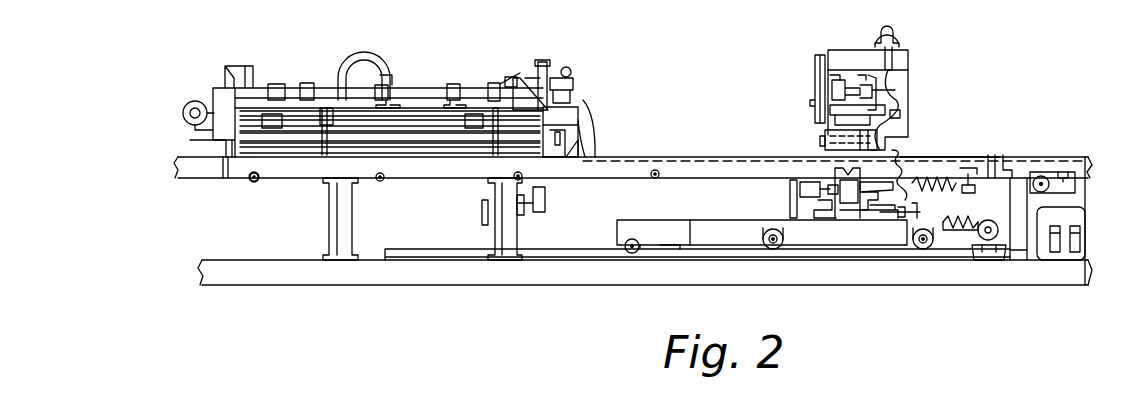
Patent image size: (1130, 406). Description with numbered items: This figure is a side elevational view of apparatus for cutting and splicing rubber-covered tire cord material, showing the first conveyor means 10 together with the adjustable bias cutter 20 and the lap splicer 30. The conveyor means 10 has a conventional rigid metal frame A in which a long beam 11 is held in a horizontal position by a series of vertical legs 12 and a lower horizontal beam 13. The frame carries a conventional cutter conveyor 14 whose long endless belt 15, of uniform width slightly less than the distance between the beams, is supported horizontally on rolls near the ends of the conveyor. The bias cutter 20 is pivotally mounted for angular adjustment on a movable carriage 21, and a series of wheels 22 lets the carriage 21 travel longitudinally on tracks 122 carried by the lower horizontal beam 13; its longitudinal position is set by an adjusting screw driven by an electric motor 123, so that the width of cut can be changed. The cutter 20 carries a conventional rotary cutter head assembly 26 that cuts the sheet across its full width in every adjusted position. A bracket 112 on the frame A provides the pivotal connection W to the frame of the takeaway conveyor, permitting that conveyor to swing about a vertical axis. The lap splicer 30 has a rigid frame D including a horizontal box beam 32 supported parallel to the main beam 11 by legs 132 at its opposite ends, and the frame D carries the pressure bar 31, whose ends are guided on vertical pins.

The first conveyor means 10 is at (684, 151).
The long beam 11 is at (203, 180).
The vertical legs 12 is at (327, 225).
The lower horizontal beam 13 is at (440, 275).
The cutter conveyor 14 is at (930, 156).
The endless belt 15 is at (630, 154).
The adjustable bias cutter 20 is at (913, 37).
The carriage 21 is at (737, 220).
The wheels 22 is at (630, 252).
The rotary cutter head assembly 26 is at (820, 135).
The lap splicer 30 is at (585, 72).
The pressure bar 31 is at (407, 133).
The horizontal box beam 32 is at (570, 118).
The bracket 112 is at (525, 217).
The tracks 122 is at (827, 247).
The electric motor 123 is at (984, 219).
The legs 132 is at (581, 150).
The rigid metal frame A is at (270, 180).
The rigid frame D is at (580, 108).
The pivotal connection W is at (552, 200).